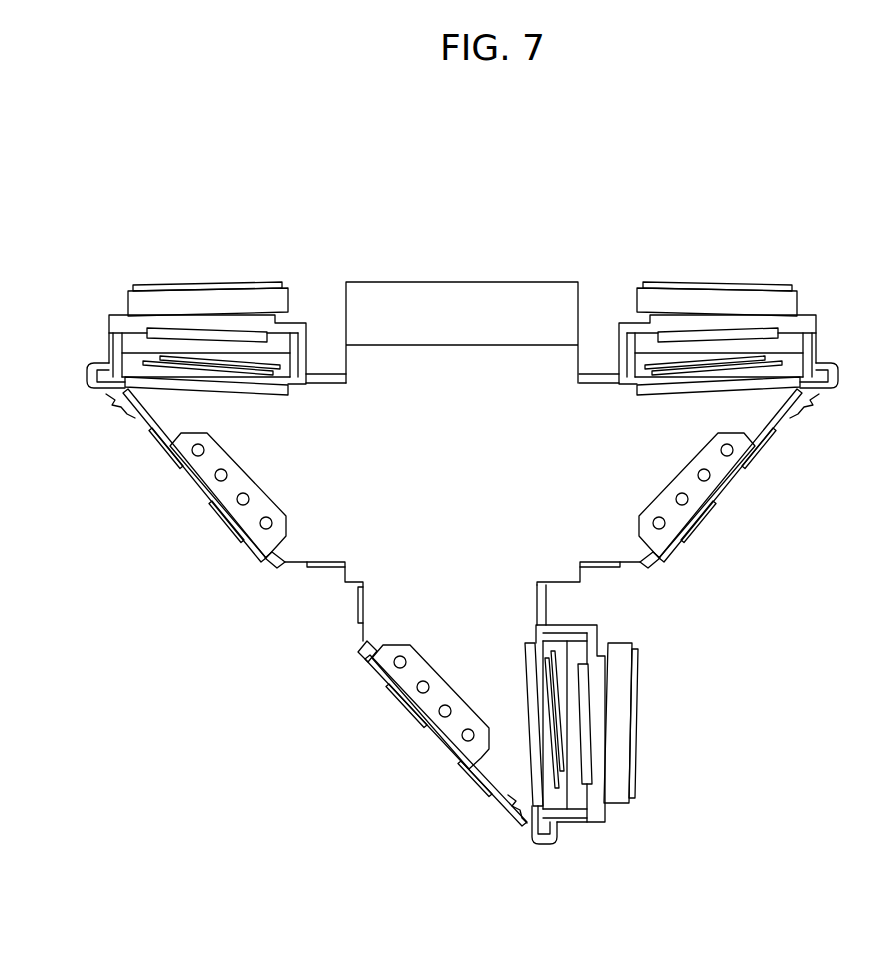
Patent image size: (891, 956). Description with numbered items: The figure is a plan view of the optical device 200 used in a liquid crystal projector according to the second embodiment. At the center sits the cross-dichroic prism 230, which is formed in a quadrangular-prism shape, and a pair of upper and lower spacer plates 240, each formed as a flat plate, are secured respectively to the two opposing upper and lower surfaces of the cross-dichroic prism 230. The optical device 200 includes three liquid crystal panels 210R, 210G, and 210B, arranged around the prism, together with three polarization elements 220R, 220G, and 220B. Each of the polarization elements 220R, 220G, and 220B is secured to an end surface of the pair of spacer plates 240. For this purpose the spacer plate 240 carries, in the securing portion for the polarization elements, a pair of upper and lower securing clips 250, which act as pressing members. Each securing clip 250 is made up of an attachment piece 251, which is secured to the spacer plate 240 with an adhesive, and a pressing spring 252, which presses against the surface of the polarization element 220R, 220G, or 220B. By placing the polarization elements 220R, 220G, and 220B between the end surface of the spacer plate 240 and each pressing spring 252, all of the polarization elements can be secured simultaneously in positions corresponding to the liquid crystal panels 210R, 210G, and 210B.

The optical device 200 is at (486, 170).
The liquid crystal panel 210R is at (188, 300).
The liquid crystal panel 210B is at (722, 300).
The liquid crystal panel 210G is at (618, 737).
The polarization element 220R is at (153, 426).
The polarization element 220B is at (763, 436).
The polarization element 220G is at (493, 776).
The cross-dichroic prism 230 is at (450, 300).
The spacer plate 240 is at (364, 604).
The securing clip 250 is at (735, 485).
The attachment piece 251 is at (722, 490).
The pressing spring 252 is at (704, 520).